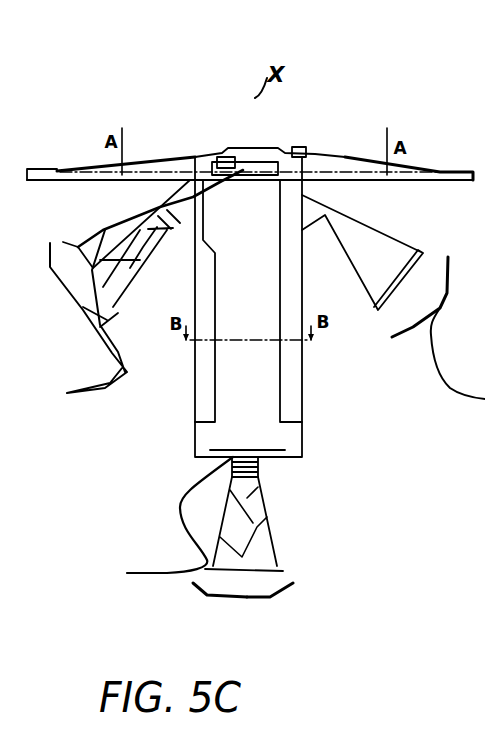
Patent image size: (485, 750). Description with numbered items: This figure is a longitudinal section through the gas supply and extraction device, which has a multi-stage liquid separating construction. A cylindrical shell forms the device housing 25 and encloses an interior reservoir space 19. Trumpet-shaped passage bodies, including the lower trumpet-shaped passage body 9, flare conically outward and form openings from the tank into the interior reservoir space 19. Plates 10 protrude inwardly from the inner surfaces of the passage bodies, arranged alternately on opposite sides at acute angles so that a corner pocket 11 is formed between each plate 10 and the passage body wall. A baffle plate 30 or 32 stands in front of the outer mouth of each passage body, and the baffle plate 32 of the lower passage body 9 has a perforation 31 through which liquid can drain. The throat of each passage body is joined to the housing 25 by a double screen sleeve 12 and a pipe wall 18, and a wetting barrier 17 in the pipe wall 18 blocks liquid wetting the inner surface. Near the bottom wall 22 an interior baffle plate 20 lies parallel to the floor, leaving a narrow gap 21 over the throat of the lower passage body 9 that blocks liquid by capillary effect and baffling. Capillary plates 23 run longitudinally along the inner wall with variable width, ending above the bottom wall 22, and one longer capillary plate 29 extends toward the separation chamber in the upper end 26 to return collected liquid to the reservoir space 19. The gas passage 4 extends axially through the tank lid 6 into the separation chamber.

The gas passage 4 is at (260, 155).
The tank lid 6 is at (213, 148).
The lower trumpet-shaped passage body 9 is at (257, 518).
The plate 10 is at (327, 548).
The corner pocket 11 is at (100, 170).
The double screen sleeve 12 is at (207, 146).
The wetting barrier 17 is at (180, 185).
The pipe wall 18 is at (250, 148).
The interior reservoir space 19 is at (227, 373).
The interior baffle plate 20 is at (161, 523).
The narrow gap 21 is at (213, 453).
The bottom wall 22 is at (268, 460).
The capillary plate 23 is at (288, 355).
The device housing 25 is at (300, 258).
The upper end 26 is at (308, 152).
The longer capillary plate 29 is at (347, 152).
The baffle plate 30 is at (483, 418).
The perforation 31 is at (238, 597).
The baffle plate of lower passage body 32 is at (287, 583).